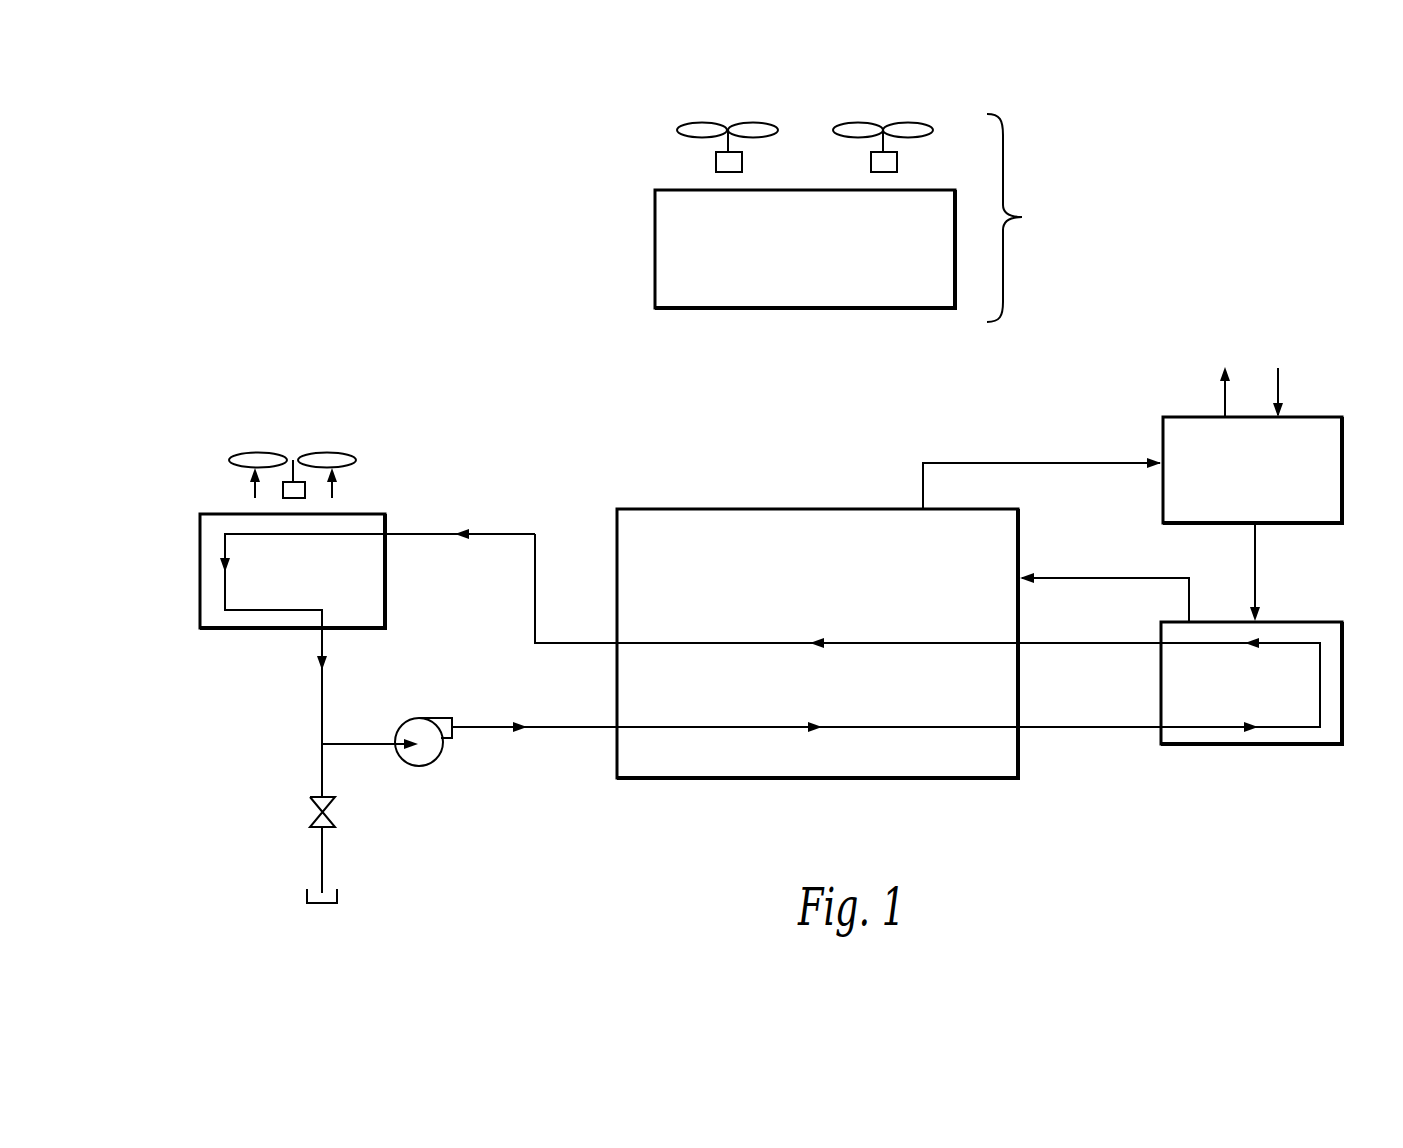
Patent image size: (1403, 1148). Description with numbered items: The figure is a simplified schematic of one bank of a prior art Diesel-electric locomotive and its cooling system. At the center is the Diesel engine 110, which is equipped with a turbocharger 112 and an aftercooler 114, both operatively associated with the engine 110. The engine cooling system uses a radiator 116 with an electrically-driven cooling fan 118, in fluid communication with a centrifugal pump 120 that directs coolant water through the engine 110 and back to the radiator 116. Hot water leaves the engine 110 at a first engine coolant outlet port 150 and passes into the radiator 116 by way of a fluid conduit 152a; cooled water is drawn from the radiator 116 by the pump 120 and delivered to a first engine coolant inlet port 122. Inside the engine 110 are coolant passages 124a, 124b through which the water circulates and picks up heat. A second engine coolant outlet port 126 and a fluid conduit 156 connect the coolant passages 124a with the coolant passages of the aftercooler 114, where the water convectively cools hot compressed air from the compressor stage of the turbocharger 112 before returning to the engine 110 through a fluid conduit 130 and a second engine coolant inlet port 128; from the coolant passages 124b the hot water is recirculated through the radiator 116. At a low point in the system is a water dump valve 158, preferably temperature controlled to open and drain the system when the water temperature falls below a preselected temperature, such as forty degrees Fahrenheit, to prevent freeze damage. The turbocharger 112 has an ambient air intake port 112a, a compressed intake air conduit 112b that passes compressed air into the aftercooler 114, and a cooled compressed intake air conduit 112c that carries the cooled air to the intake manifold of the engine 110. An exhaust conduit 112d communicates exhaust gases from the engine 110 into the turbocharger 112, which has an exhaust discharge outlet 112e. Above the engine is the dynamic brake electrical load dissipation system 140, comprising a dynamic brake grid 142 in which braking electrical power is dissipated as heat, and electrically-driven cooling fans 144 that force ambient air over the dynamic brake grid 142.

The Diesel engine 110 is at (833, 602).
The turbocharger 112 is at (1273, 479).
The ambient air intake port 112a is at (1282, 392).
The compressed intake air conduit 112b is at (1258, 548).
The cooled compressed intake air conduit 112c is at (1080, 577).
The exhaust conduit 112d is at (1075, 462).
The exhaust discharge outlet 112e is at (1222, 398).
The aftercooler 114 is at (1272, 702).
The radiator 116 is at (308, 588).
The cooling fan 118 is at (320, 452).
The centrifugal pump 120 is at (418, 768).
The first engine coolant inlet port 122 is at (612, 730).
The coolant passages 124a is at (862, 724).
The coolant passages 124b is at (862, 646).
The second engine coolant outlet port 126 is at (1020, 730).
The second engine coolant inlet port 128 is at (1020, 643).
The fluid conduit 130 is at (1053, 645).
The dynamic brake electrical load dissipation system 140 is at (1027, 218).
The dynamic brake grid 142 is at (824, 257).
The cooling fans 144 is at (835, 130).
The first engine coolant outlet port 150 is at (612, 647).
The fluid conduit 152a is at (495, 533).
The fluid conduit 156 is at (1128, 725).
The water dump valve 158 is at (310, 818).